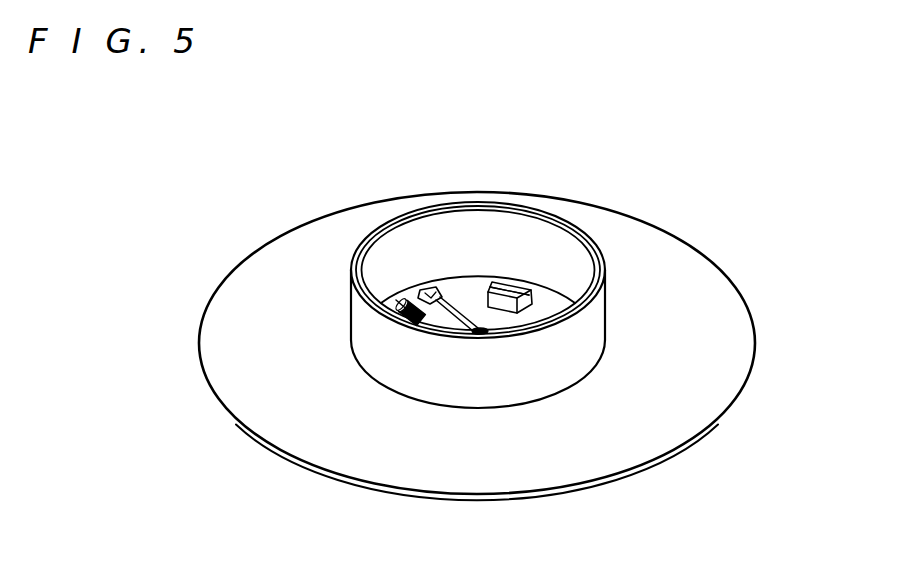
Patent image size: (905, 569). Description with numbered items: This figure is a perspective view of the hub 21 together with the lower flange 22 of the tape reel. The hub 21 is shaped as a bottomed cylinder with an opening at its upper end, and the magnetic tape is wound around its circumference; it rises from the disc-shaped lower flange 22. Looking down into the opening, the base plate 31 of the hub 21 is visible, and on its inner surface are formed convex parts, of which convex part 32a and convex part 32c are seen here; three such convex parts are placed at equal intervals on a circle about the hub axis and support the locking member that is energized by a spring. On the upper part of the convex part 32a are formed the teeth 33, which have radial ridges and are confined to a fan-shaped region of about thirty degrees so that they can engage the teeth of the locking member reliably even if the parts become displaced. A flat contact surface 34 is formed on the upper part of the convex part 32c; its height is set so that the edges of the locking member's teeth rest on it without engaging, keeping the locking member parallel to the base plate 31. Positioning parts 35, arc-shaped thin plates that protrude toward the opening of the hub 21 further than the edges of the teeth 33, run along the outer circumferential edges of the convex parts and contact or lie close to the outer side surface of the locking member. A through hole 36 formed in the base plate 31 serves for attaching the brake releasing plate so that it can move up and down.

The hub 21 is at (621, 328).
The lower flange 22 is at (747, 297).
The base plate 31 is at (513, 323).
The convex part 32a is at (423, 321).
The convex part 32c is at (533, 311).
The teeth 33 is at (407, 300).
The contact surface 34 is at (499, 292).
The positioning part 35 is at (395, 305).
The through hole 36 is at (430, 290).